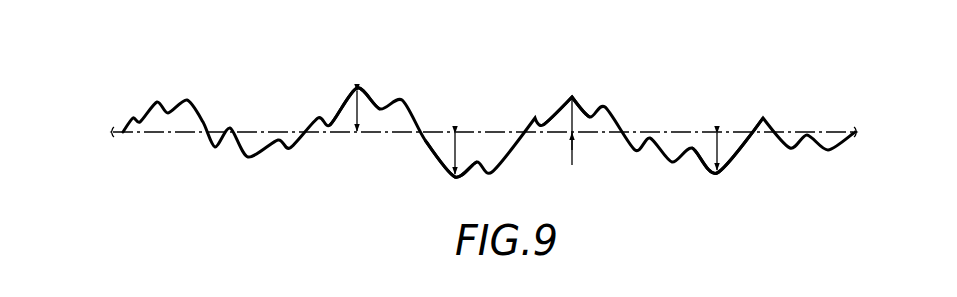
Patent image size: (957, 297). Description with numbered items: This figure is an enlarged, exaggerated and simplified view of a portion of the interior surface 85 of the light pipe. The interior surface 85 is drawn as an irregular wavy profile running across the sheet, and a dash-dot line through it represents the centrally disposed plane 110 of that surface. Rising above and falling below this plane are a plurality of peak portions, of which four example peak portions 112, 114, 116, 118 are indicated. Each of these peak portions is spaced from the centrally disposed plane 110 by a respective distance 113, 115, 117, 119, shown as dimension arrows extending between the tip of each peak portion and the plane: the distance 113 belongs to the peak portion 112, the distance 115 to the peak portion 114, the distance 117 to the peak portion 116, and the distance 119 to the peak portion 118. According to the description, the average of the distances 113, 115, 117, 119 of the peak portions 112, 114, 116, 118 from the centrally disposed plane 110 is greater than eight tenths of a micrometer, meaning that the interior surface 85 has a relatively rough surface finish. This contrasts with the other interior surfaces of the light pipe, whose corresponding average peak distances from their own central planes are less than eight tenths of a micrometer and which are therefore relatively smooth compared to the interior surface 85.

The interior surface 85 is at (103, 116).
The centrally disposed plane 110 is at (843, 130).
The peak portion 112 is at (357, 88).
The distance 113 is at (359, 112).
The peak portion 114 is at (453, 181).
The distance 115 is at (458, 155).
The peak portion 116 is at (572, 95).
The distance 117 is at (573, 118).
The peak portion 118 is at (718, 176).
The distance 119 is at (715, 152).